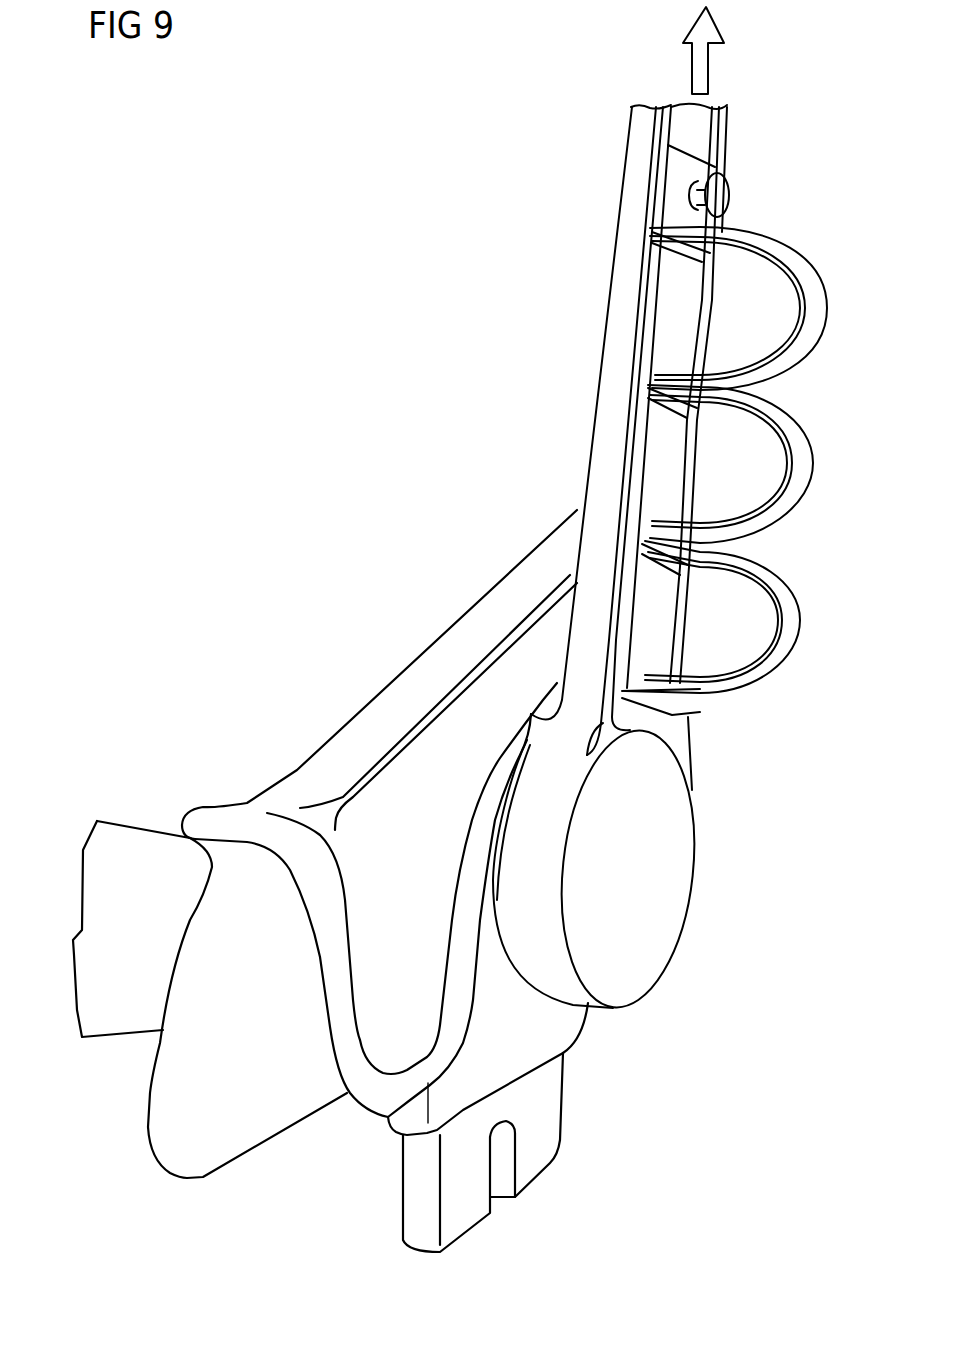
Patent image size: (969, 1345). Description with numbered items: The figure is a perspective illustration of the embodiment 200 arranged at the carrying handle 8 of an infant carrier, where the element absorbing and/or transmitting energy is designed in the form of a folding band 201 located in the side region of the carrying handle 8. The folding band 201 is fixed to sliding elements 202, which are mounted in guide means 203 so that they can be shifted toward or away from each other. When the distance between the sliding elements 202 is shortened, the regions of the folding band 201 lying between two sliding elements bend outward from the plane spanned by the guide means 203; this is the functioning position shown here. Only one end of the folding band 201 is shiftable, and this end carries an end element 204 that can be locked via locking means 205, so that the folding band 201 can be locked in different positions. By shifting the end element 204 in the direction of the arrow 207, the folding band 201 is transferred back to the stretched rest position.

The carrying handle 8 is at (598, 487).
The further preferred embodiment 200 is at (487, 183).
The folding band 201 is at (748, 683).
The sliding elements 202 is at (674, 414).
The guide means 203 is at (700, 329).
The end element 204 is at (677, 185).
The locking means 205 is at (729, 197).
The arrow 207 is at (692, 71).